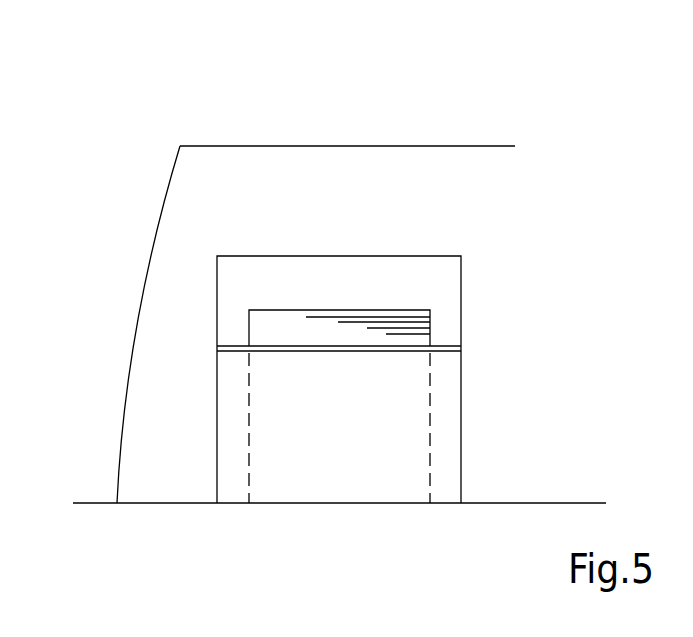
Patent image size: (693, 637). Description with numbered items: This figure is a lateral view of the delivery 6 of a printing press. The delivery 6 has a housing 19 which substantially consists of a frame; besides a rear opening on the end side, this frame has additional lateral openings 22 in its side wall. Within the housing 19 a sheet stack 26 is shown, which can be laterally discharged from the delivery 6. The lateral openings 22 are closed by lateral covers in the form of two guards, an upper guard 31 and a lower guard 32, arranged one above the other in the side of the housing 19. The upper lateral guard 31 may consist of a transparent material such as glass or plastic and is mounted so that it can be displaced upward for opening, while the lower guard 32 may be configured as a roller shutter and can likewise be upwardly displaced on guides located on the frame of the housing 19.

The delivery 6 is at (240, 118).
The housing 19 is at (412, 163).
The lateral openings 22 is at (461, 268).
The sheet stack 26 is at (263, 327).
The upper lateral guard 31 is at (438, 285).
The lower guard 32 is at (448, 390).